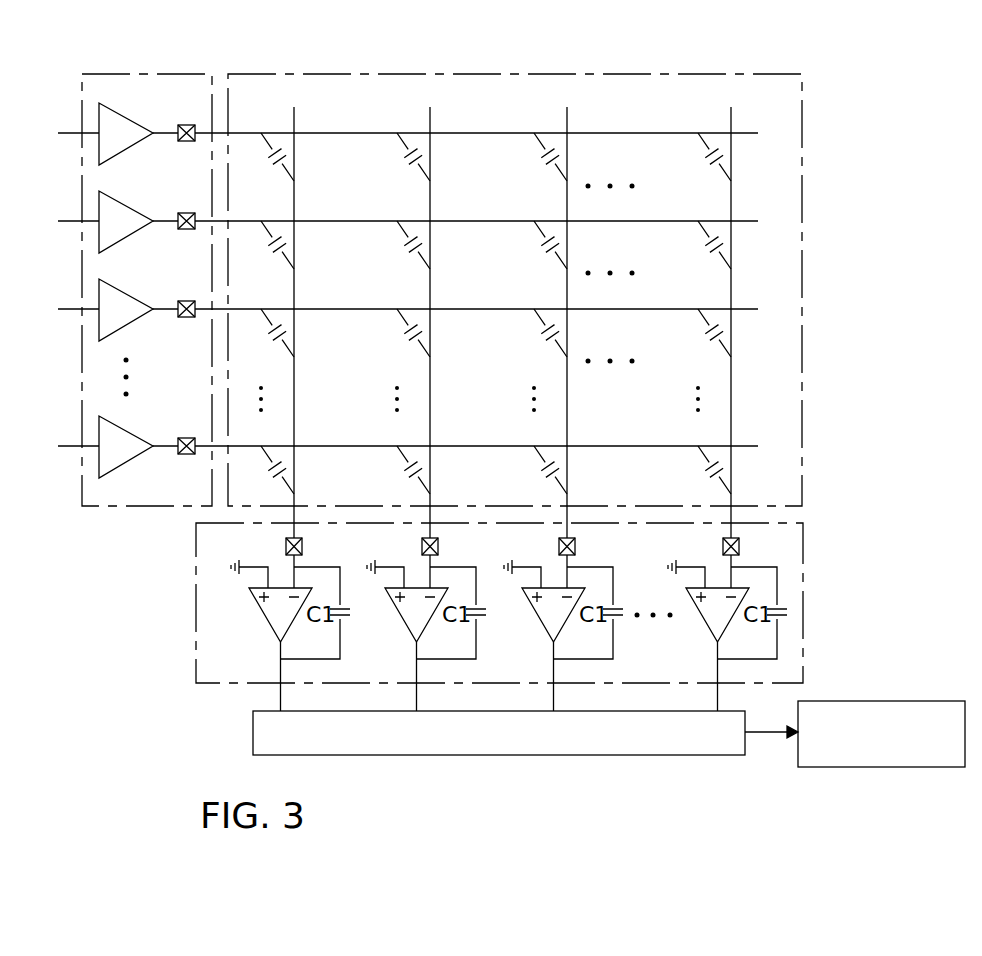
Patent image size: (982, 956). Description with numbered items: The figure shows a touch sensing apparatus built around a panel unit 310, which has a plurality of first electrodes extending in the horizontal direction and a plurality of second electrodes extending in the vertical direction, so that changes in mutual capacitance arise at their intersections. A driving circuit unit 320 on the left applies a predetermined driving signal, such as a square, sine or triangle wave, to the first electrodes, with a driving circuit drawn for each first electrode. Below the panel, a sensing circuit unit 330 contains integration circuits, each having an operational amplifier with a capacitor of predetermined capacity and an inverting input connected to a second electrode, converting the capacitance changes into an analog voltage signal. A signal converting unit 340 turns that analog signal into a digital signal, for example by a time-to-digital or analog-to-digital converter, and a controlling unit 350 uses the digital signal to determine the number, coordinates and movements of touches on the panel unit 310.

The panel unit 310 is at (533, 72).
The driving circuit unit 320 is at (150, 72).
The sensing circuit unit 330 is at (196, 603).
The signal converting unit 340 is at (497, 757).
The controlling unit 350 is at (848, 768).